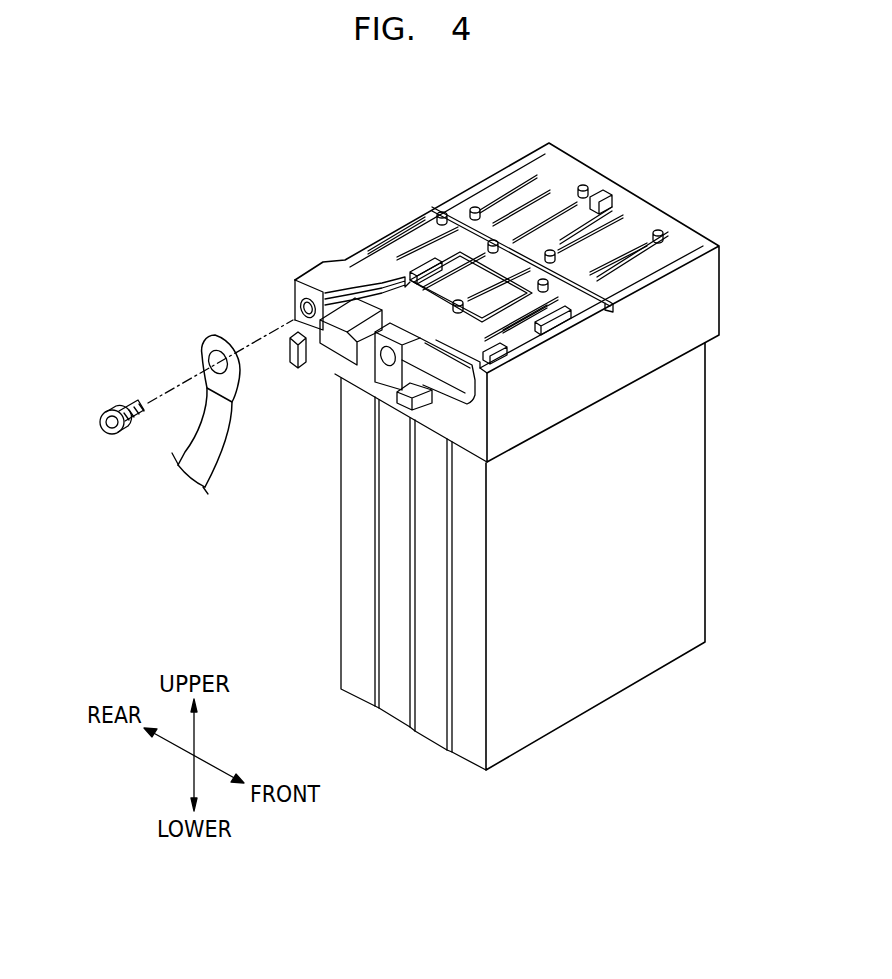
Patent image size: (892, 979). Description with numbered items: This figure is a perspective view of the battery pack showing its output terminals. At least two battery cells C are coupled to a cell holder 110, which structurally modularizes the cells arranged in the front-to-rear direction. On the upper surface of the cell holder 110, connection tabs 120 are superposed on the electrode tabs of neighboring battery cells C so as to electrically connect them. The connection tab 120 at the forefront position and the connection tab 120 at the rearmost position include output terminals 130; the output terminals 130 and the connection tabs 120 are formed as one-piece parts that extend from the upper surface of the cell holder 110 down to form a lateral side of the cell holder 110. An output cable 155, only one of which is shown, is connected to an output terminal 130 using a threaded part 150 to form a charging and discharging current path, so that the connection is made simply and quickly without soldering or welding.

The cell holder 110 is at (707, 293).
The connection tabs 120 is at (510, 303).
The output terminals 130 is at (295, 293).
The threaded parts 150 is at (128, 408).
The output cables 155 is at (205, 347).
The battery cells C is at (430, 729).